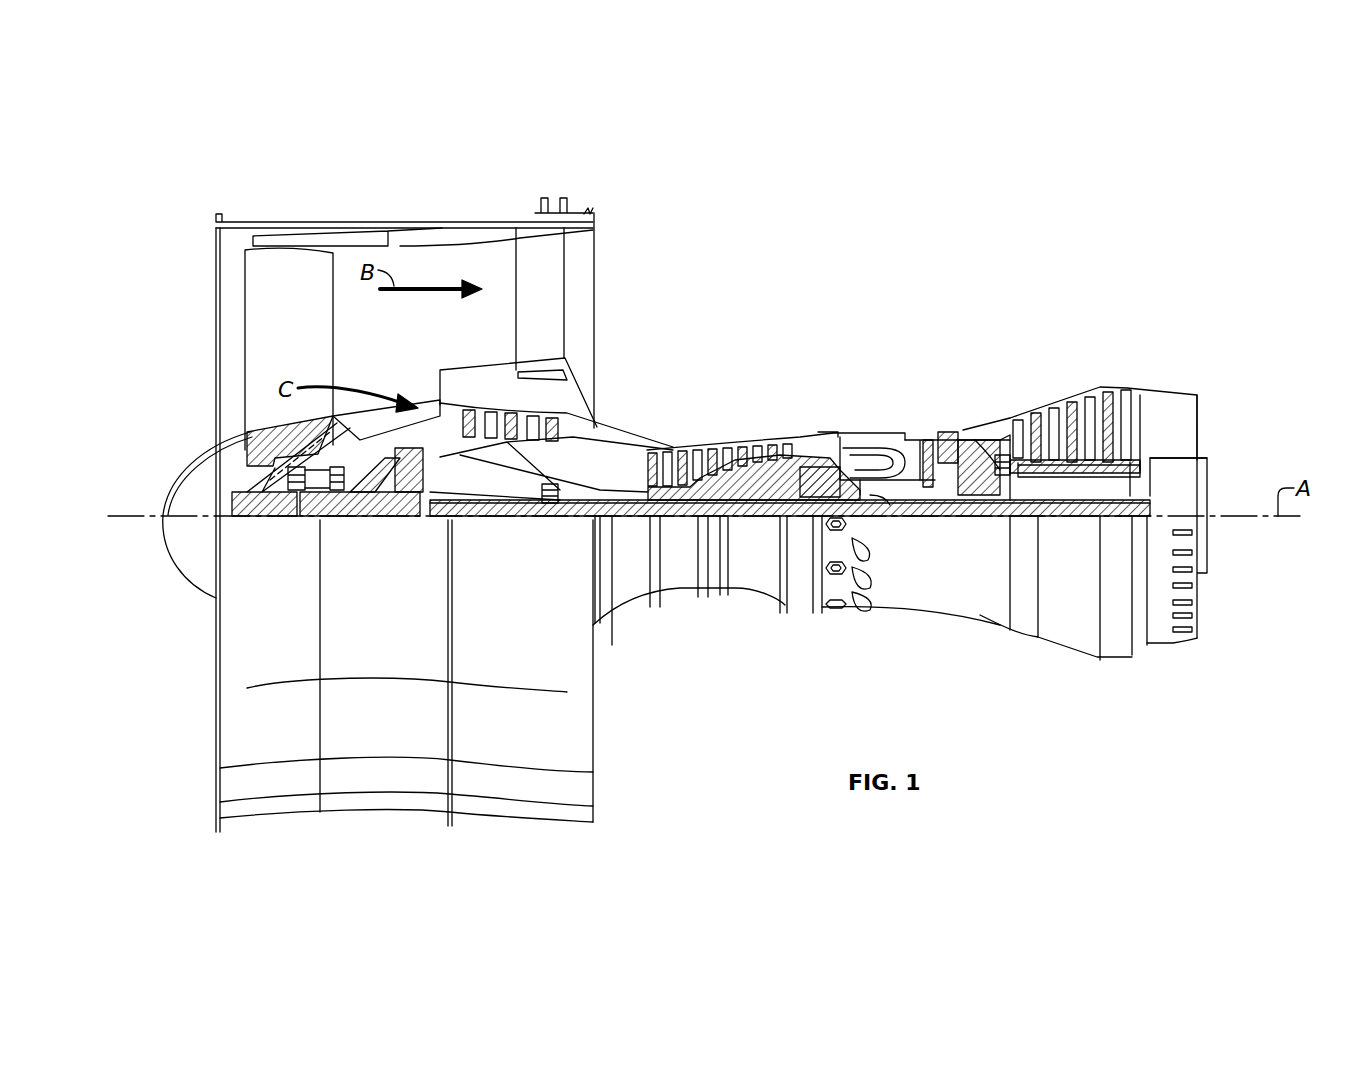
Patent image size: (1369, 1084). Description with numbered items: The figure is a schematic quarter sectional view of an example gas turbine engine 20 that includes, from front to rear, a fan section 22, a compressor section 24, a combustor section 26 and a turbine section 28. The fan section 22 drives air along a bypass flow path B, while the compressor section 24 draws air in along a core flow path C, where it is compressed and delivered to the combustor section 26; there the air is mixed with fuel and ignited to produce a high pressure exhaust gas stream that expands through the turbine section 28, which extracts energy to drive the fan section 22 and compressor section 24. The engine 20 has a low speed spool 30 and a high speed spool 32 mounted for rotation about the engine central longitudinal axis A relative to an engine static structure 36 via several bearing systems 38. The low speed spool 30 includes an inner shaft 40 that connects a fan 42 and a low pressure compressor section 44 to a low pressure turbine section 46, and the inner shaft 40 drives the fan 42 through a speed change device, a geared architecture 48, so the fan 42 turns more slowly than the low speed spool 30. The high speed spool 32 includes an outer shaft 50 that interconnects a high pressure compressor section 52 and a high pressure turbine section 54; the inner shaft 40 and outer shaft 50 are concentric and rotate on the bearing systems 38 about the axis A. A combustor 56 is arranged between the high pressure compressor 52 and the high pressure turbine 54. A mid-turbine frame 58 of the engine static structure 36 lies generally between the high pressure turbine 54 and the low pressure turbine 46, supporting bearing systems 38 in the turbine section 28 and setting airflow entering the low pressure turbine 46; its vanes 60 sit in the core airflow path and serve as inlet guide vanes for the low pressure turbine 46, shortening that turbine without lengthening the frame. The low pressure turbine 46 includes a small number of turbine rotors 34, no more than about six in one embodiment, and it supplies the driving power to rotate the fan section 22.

The gas turbine engine 20 is at (1048, 228).
The fan section 22 is at (426, 196).
The compressor section 24 is at (855, 324).
The combustor section 26 is at (920, 324).
The turbine section 28 is at (1150, 324).
The low speed spool 30 is at (752, 535).
The high speed spool 32 is at (782, 480).
The turbine rotors 34 is at (1095, 480).
The engine static structure 36 is at (802, 625).
The bearing systems 38 is at (297, 500).
The inner shaft 40 is at (616, 520).
The fan 42 is at (303, 320).
The low pressure compressor section 44 is at (520, 396).
The low pressure turbine section 46 is at (1072, 398).
The geared architecture 48 is at (410, 498).
The outer shaft 50 is at (880, 500).
The high pressure compressor section 52 is at (722, 445).
The high pressure turbine section 54 is at (947, 426).
The combustor 56 is at (870, 455).
The mid-turbine frame 58 is at (985, 422).
The vanes 60 is at (985, 450).